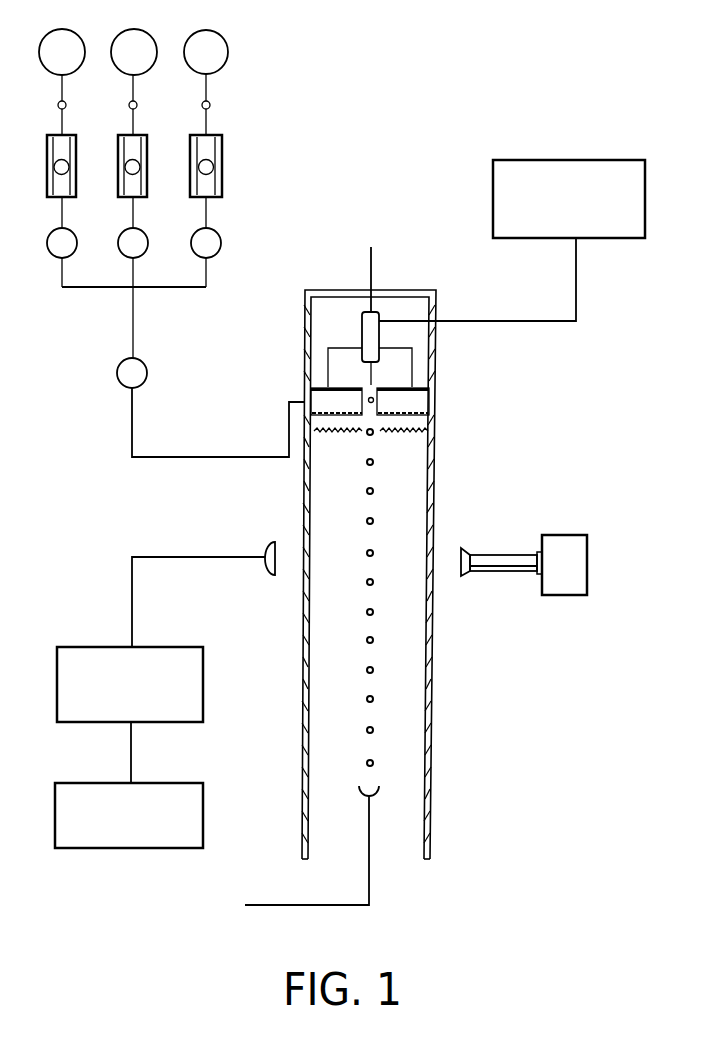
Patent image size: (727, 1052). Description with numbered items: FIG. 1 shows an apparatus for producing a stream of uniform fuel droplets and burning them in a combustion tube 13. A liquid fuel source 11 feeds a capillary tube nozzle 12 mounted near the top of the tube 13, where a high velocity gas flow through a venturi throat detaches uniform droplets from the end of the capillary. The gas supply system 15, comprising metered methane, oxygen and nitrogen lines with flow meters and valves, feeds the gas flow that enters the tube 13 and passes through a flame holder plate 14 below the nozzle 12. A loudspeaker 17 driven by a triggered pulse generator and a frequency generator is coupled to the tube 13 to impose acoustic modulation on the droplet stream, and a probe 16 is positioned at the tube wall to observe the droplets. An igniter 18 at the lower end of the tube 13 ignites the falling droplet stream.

The liquid fuel source 11 is at (596, 160).
The fuel nozzle / atomizer 12 is at (370, 336).
The combustion tube 13 is at (436, 506).
The flame holder plate 14 is at (410, 411).
The gas supply system 15 is at (148, 18).
The probe 16 is at (558, 535).
The loudspeaker 17 is at (265, 552).
The igniter 18 is at (374, 798).